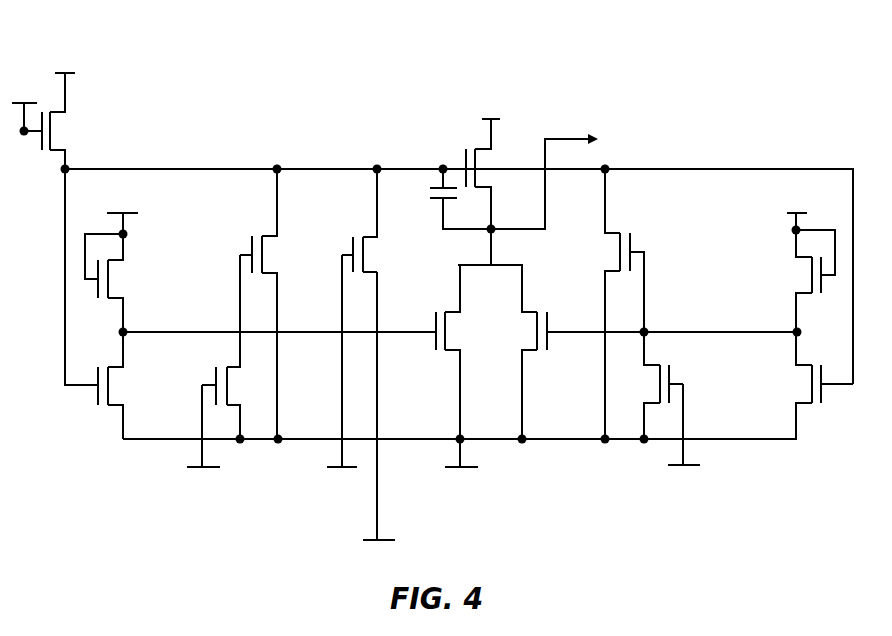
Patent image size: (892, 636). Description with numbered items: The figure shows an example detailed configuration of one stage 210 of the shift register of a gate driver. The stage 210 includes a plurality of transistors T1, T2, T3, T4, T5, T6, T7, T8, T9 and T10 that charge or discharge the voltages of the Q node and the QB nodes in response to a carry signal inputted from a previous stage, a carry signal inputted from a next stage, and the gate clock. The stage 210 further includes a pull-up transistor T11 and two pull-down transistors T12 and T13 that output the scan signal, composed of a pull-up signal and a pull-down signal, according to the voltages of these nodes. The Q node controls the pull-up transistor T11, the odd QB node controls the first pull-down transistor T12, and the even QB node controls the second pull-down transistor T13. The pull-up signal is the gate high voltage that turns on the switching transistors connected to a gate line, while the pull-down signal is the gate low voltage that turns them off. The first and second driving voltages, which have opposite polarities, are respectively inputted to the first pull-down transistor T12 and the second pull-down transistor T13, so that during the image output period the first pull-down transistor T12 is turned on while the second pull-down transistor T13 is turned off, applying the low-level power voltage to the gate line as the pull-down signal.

The stage 210 is at (472, 23).
The transistor T1 is at (56, 121).
The transistor T2 is at (370, 220).
The transistor T3 is at (114, 283).
The transistor T4 is at (104, 385).
The transistor T5 is at (232, 347).
The transistor T6 is at (269, 304).
The transistor T7 is at (806, 281).
The transistor T8 is at (816, 385).
The transistor T9 is at (654, 385).
The transistor T10 is at (612, 304).
The pull-up transistor T11 is at (499, 174).
The first pull-down transistor T12 is at (456, 352).
The second pull-down transistor T13 is at (522, 352).